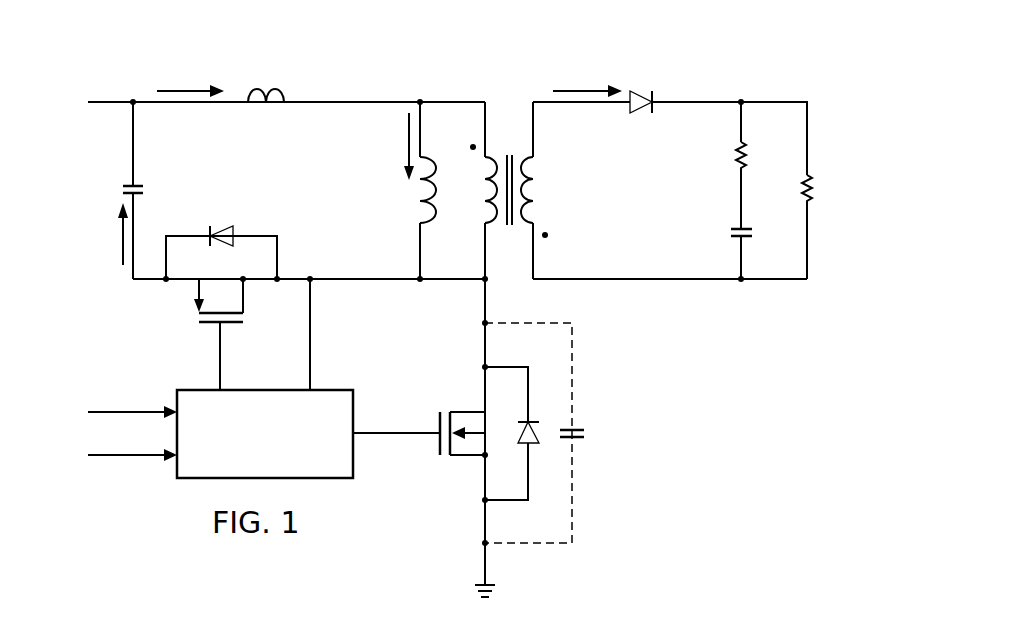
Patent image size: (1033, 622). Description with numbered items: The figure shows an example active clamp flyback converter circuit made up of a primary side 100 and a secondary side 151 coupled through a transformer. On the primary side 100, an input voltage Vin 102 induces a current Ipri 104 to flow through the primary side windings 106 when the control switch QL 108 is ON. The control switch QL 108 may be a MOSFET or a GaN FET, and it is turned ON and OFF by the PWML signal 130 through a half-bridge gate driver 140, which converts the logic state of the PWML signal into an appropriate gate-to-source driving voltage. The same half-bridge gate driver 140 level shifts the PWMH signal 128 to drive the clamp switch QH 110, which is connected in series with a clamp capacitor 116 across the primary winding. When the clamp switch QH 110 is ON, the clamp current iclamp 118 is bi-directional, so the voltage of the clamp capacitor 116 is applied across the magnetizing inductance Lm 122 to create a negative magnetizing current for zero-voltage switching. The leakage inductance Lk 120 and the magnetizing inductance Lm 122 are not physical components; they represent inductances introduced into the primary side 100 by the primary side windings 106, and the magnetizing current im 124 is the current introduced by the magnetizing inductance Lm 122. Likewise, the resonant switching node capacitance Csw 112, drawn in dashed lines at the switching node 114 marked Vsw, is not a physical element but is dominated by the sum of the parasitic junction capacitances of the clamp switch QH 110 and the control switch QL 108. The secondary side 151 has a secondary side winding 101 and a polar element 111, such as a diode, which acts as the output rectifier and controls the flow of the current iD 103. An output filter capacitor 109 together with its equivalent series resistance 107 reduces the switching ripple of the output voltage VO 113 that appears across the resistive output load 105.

The primary side 100 is at (438, 52).
The secondary side winding 101 is at (522, 225).
The input voltage Vin 102 is at (110, 100).
The current iD 103 is at (570, 88).
The current Ipri 104 is at (175, 88).
The resistive output load 105 is at (815, 190).
The primary side windings 106 is at (495, 157).
The equivalent series resistance 107 is at (735, 157).
The control switch QL 108 is at (437, 445).
The output filter capacitor 109 is at (730, 234).
The clamp switch QH 110 is at (211, 326).
The polar element 111 is at (640, 95).
The resonant switching node capacitance Csw 112 is at (586, 433).
The output voltage VO 113 is at (797, 100).
The switching node 114 is at (480, 285).
The clamp capacitor 116 is at (122, 190).
The clamp current iclamp 118 is at (122, 262).
The leakage inductance Lk 120 is at (280, 88).
The magnetizing inductance Lm 122 is at (430, 160).
The magnetizing current im 124 is at (404, 134).
The PWMH signal 128 is at (135, 410).
The PWML signal 130 is at (135, 458).
The half-bridge gate driver 140 is at (266, 390).
The secondary side 151 is at (760, 52).